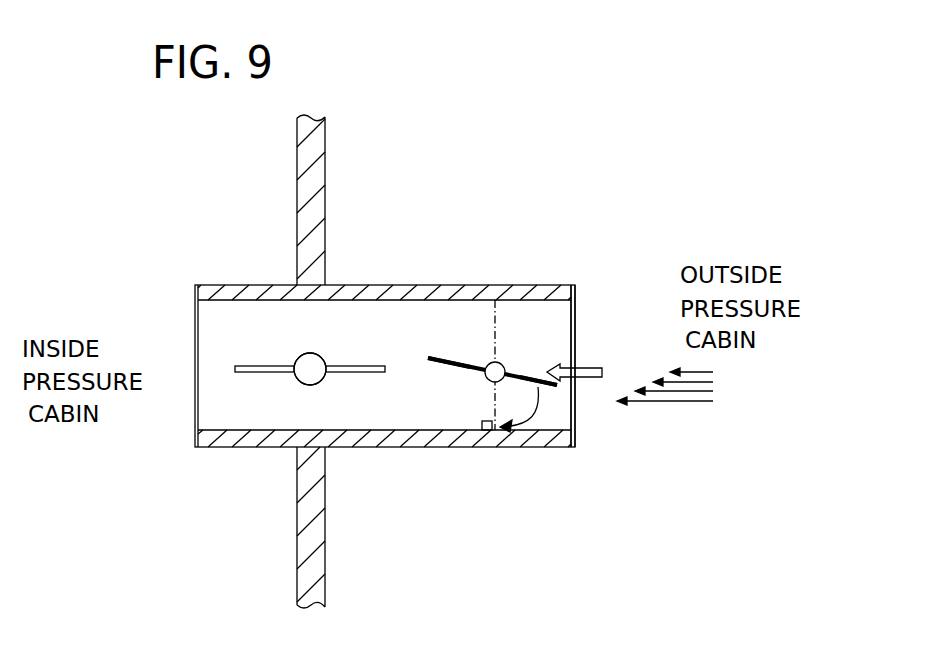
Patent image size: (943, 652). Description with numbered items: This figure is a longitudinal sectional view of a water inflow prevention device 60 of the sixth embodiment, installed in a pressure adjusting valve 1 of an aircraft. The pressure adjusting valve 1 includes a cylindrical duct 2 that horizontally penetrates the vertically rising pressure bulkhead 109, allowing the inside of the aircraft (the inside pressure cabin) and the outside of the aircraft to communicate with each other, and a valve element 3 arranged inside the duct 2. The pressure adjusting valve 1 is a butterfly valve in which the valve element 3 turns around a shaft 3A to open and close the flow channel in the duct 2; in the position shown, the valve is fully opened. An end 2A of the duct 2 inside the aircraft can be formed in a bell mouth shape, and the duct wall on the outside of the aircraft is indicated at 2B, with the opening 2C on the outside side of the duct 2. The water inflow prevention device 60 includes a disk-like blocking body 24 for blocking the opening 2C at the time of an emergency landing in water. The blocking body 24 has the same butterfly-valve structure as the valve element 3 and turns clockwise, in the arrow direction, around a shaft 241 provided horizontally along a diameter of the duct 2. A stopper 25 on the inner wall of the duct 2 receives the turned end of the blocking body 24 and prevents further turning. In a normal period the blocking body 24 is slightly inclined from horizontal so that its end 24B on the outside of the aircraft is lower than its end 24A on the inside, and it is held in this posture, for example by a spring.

The pressure adjusting valve 1 is at (180, 257).
The duct 2 is at (349, 285).
The end of the duct 2A is at (233, 285).
The outer side wall of housing 2B is at (556, 285).
The opening 2C is at (575, 400).
The valve element 3 is at (247, 366).
The shaft 3A is at (302, 353).
The blocking body 24 is at (513, 363).
The end of the blocking body 24A is at (432, 357).
The end of the blocking body 24B is at (540, 369).
The shaft 241 is at (488, 361).
The stopper 25 is at (481, 430).
The water inflow prevention device 60 is at (595, 273).
The pressure bulkhead 109 is at (327, 190).